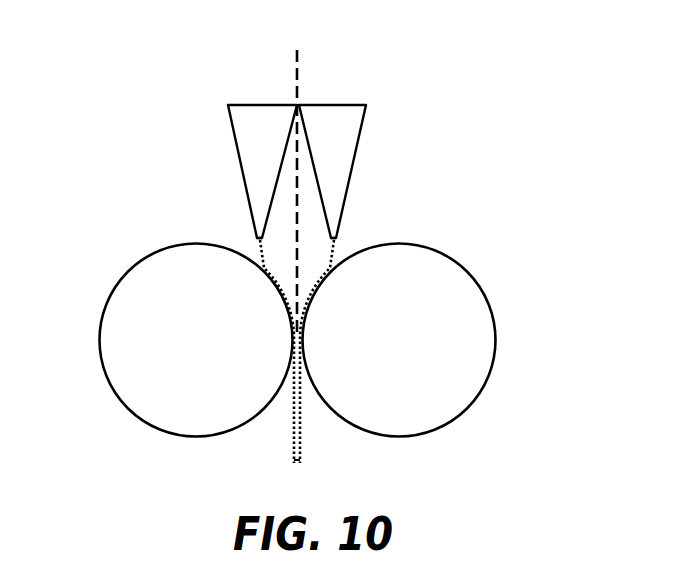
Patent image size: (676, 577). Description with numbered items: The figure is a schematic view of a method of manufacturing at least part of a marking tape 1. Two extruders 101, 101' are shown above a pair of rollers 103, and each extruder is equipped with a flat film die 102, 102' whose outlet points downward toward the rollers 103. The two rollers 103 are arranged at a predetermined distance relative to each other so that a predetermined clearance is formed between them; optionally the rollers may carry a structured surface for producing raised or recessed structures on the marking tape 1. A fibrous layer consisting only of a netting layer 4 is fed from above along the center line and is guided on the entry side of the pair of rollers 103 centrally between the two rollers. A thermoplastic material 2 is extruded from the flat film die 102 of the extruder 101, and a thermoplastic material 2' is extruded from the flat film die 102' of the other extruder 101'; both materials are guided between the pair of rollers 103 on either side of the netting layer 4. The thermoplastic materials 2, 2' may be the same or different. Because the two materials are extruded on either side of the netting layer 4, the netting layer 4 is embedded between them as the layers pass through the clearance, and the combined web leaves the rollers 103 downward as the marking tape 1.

The marking tape 1 is at (305, 443).
The thermoplastic material 2 is at (232, 335).
The thermoplastic material 2' is at (364, 335).
The netting layer 4 is at (296, 78).
The extruder 101 is at (225, 171).
The extruder 101' is at (364, 171).
The flat film die 102 is at (230, 210).
The flat film die 102' is at (369, 210).
The roller 103 is at (112, 390).